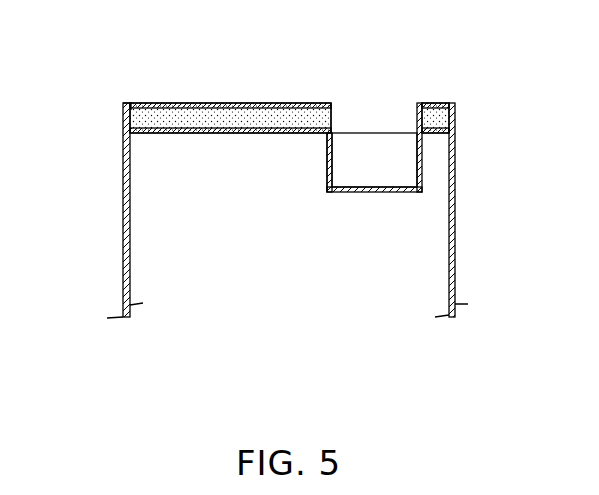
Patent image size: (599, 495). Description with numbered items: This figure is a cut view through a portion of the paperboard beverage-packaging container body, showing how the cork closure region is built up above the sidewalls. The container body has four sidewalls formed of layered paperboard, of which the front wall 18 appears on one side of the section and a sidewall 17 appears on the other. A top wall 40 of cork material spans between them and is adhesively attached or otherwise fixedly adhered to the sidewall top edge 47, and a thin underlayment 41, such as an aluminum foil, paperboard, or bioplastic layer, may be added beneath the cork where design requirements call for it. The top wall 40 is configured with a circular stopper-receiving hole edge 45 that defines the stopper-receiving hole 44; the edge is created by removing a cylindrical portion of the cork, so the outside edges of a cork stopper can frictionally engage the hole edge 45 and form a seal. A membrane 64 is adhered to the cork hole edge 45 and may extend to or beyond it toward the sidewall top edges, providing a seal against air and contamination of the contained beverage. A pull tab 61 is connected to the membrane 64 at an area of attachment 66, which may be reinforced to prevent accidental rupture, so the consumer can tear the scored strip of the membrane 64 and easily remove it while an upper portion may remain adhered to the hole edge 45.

The first side wall 17 is at (123, 223).
The front wall 18 is at (455, 230).
The top wall 40 is at (231, 88).
The thin underlayment 41 is at (438, 132).
The stopper-receiving hole 44 is at (379, 142).
The stopper-receiving hole edge 45 is at (332, 137).
The sidewall top edge 47 is at (128, 104).
The pull tab 61 is at (333, 148).
The membrane 64 is at (382, 192).
The area of attachment 66 is at (327, 162).